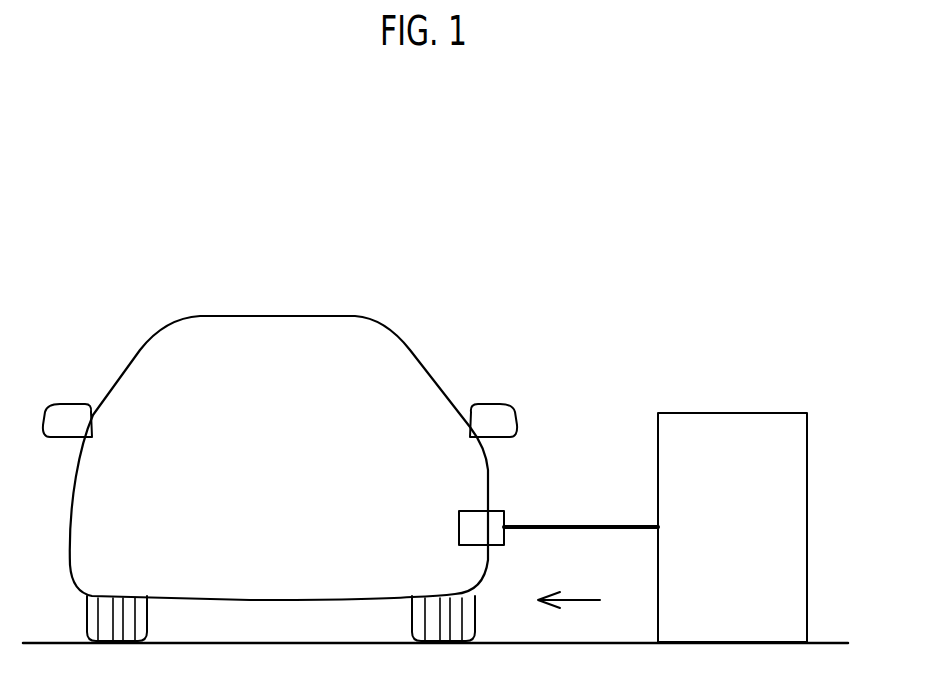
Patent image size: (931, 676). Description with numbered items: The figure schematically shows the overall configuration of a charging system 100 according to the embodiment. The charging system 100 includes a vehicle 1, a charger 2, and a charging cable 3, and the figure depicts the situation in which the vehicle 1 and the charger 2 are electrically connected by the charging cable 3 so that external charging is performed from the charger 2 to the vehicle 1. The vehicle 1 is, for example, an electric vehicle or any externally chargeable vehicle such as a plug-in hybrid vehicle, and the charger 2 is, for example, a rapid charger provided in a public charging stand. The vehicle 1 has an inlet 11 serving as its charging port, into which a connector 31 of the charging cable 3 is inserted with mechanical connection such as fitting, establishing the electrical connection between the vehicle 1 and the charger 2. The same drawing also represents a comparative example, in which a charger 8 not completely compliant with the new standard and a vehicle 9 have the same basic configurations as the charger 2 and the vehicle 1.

The charging system 100 is at (122, 195).
The vehicle 1 is at (291, 460).
The vehicle 9 is at (291, 478).
The inlet 11 is at (472, 510).
The connector 31 is at (497, 510).
The charging cable 3 is at (607, 523).
The charger 2 is at (753, 512).
The charger 8 is at (780, 412).